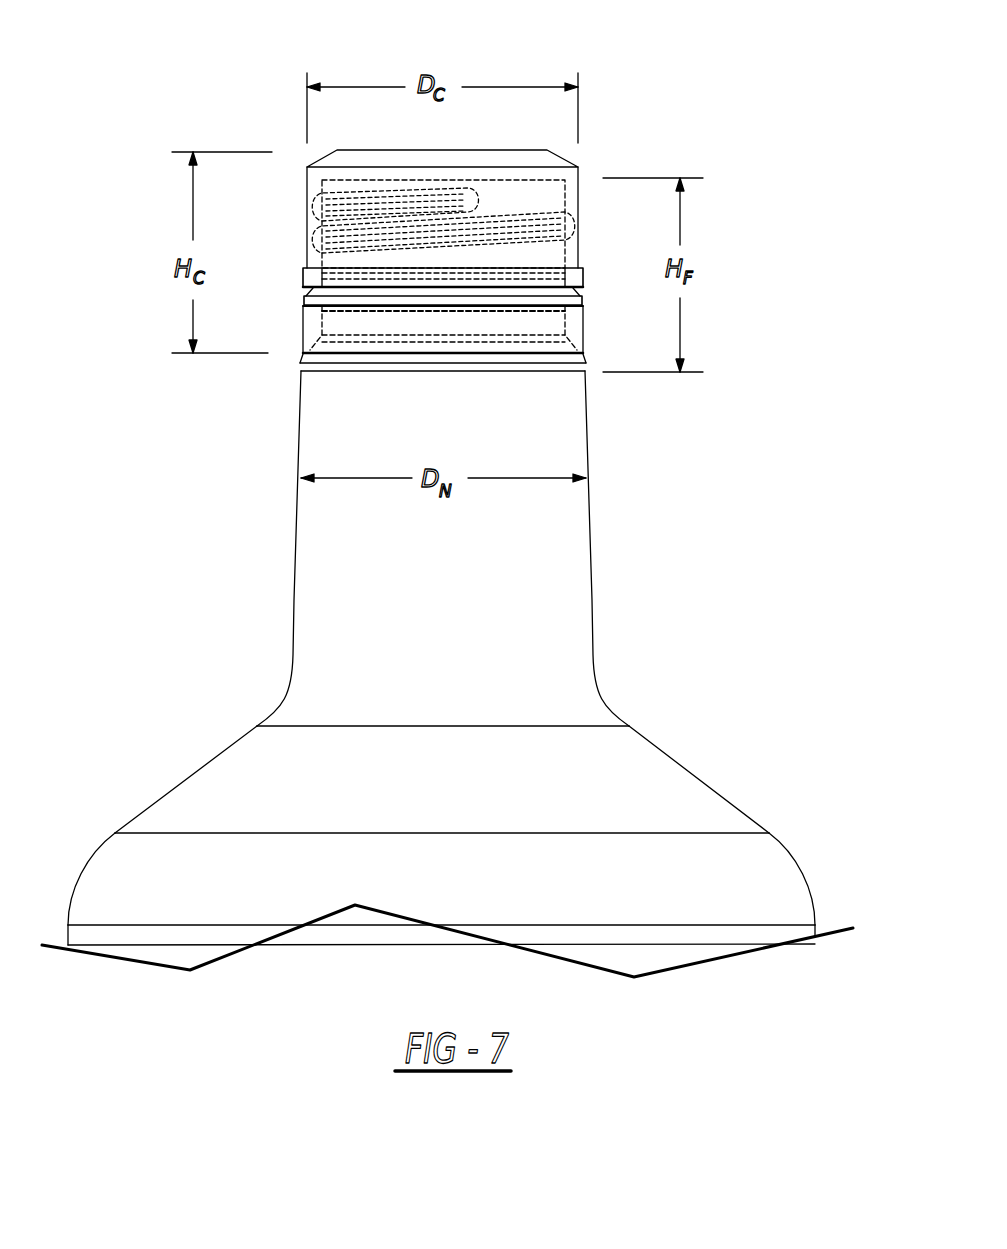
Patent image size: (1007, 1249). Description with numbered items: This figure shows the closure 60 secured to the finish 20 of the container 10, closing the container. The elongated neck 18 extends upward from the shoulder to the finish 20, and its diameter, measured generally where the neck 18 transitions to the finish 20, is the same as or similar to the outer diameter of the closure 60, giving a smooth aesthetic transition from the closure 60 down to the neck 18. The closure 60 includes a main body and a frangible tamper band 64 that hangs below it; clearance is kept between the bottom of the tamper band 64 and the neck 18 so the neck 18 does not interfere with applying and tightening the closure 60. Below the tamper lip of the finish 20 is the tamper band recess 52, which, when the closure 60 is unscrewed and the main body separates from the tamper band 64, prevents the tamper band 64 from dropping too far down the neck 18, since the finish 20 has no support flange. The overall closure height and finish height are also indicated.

The container 10 is at (174, 789).
The neck 18 is at (565, 572).
The finish 20 is at (545, 196).
The tamper band recess 52 is at (305, 332).
The closure 60 is at (307, 182).
The frangible tamper band 64 is at (583, 332).